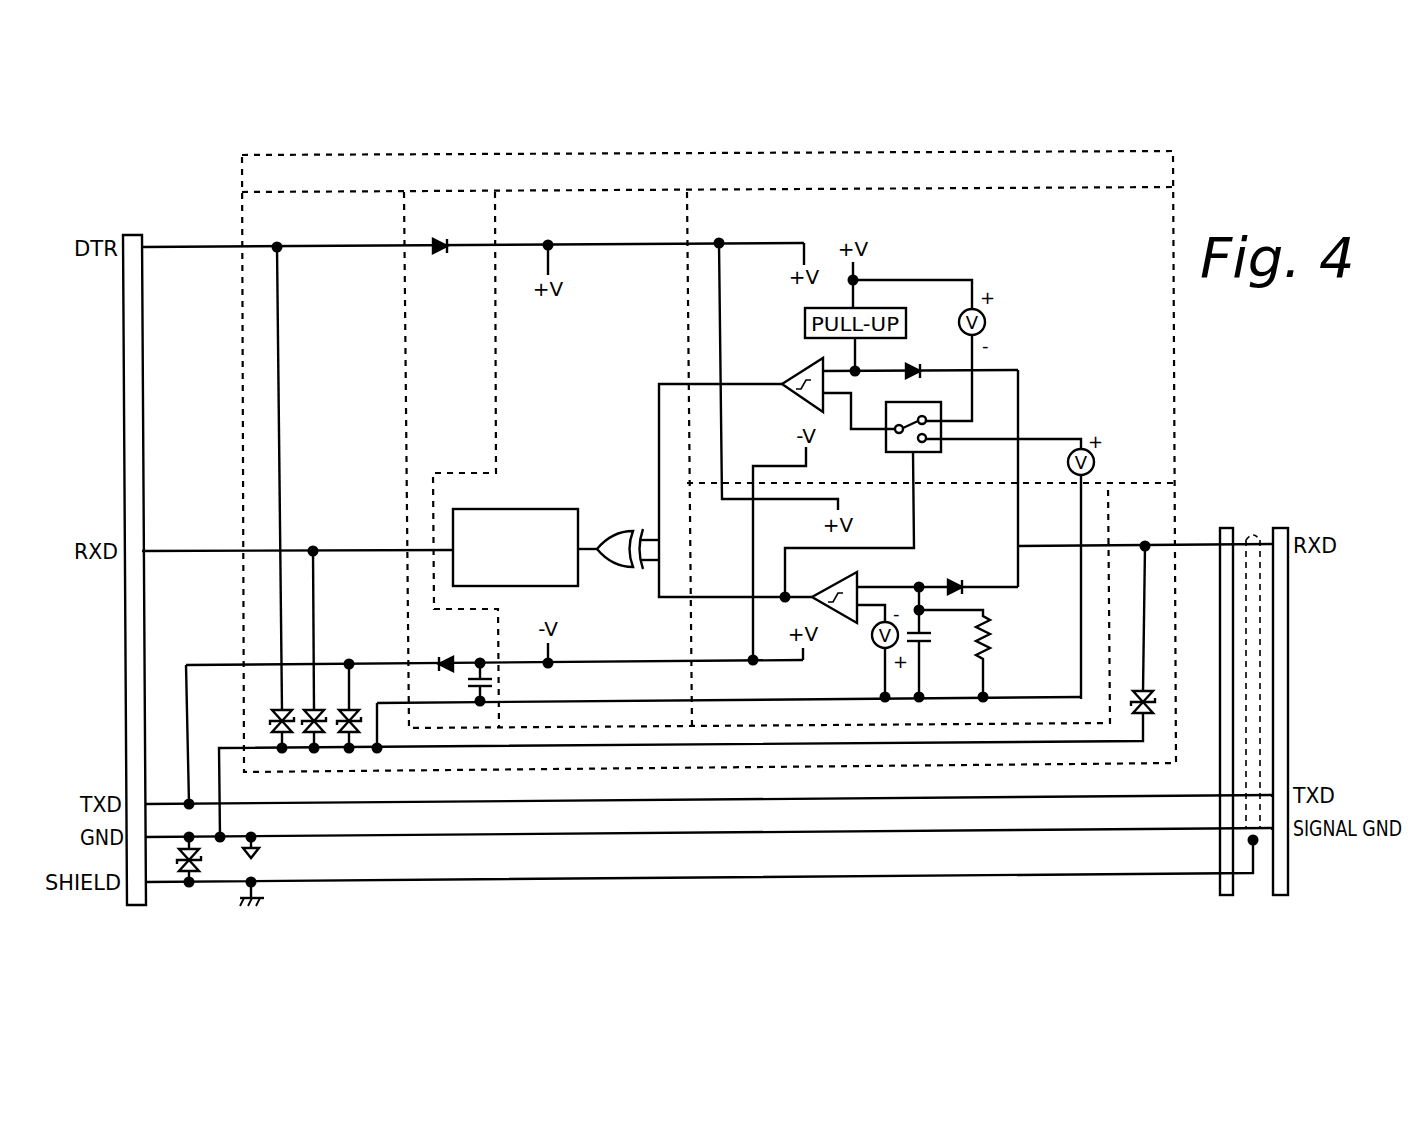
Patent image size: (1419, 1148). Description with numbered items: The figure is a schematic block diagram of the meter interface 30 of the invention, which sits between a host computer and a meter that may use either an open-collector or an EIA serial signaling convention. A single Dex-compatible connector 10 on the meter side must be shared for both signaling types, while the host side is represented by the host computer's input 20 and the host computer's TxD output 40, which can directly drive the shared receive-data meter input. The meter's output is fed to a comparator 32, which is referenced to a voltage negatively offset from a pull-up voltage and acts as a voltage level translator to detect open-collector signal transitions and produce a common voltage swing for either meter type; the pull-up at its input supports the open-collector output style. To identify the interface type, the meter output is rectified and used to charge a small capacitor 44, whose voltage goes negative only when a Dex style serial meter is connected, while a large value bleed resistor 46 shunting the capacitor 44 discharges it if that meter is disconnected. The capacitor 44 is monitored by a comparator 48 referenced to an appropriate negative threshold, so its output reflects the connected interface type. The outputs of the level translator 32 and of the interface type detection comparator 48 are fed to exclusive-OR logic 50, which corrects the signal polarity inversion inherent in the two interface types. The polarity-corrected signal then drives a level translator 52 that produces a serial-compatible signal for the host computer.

The connector 10 is at (1288, 700).
The host computer's input 20 is at (127, 734).
The interface 30 is at (834, 148).
The comparator 32 is at (798, 368).
The host computer's TxD output 40 is at (168, 800).
The capacitor 44 is at (932, 638).
The bleed resistor 46 is at (990, 645).
The comparator 48 is at (857, 573).
The exclusive-OR logic 50 is at (620, 528).
The level translator 52 is at (570, 586).